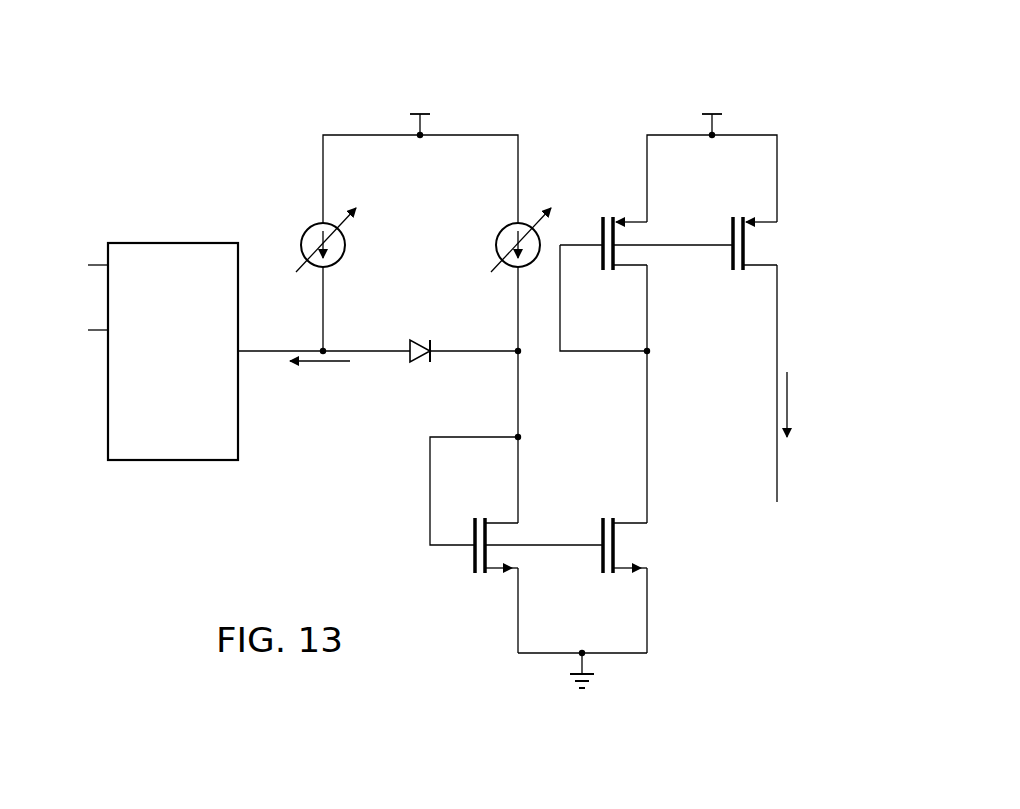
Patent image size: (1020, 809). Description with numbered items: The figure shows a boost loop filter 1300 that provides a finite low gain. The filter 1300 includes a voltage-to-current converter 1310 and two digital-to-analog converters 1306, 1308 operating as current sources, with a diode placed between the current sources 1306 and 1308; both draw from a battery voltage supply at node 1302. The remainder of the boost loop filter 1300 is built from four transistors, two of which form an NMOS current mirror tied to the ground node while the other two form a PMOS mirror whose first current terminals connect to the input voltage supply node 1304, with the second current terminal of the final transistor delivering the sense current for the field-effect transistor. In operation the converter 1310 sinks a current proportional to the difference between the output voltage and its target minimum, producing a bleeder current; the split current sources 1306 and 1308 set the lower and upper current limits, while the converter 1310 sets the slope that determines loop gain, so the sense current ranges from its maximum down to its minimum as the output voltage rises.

The boost loop filter 1300 is at (166, 101).
The battery voltage supply node 1302 is at (412, 113).
The input voltage supply node 1304 is at (720, 113).
The DAC 1306 is at (304, 231).
The DAC 1308 is at (499, 231).
The V2I converter 1310 is at (171, 243).